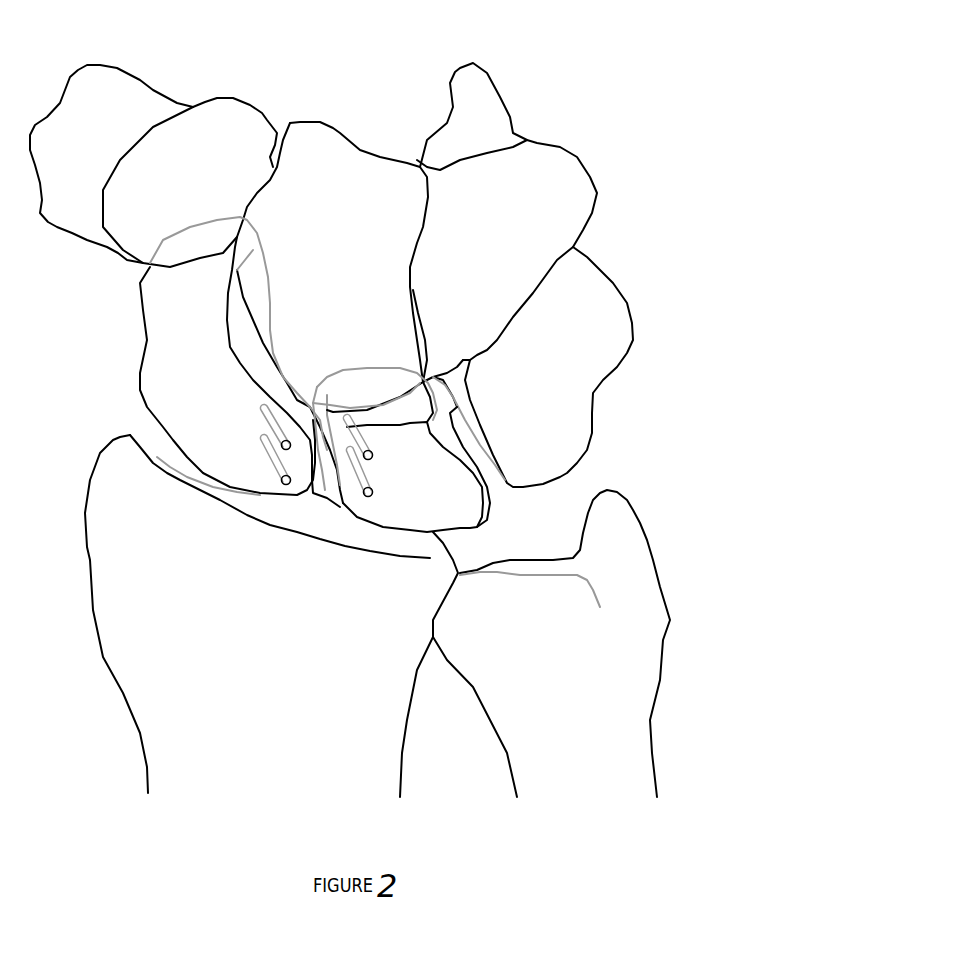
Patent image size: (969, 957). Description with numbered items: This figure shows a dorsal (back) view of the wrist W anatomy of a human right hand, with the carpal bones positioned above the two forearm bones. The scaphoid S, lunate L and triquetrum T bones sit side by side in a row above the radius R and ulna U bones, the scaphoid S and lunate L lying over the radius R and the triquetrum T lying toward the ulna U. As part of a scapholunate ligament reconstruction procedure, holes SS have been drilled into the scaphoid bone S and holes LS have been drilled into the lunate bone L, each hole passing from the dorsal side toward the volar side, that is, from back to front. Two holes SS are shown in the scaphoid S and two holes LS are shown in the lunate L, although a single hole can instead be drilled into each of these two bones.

The wrist W is at (427, 415).
The scaphoid bone S is at (227, 381).
The triquetrum bone T is at (533, 367).
The lunate bone L is at (401, 450).
The radius bone R is at (271, 616).
The ulna bone U is at (551, 643).
The holes in the scaphoid bone SS is at (266, 473).
The holes in the lunate bone LS is at (382, 504).